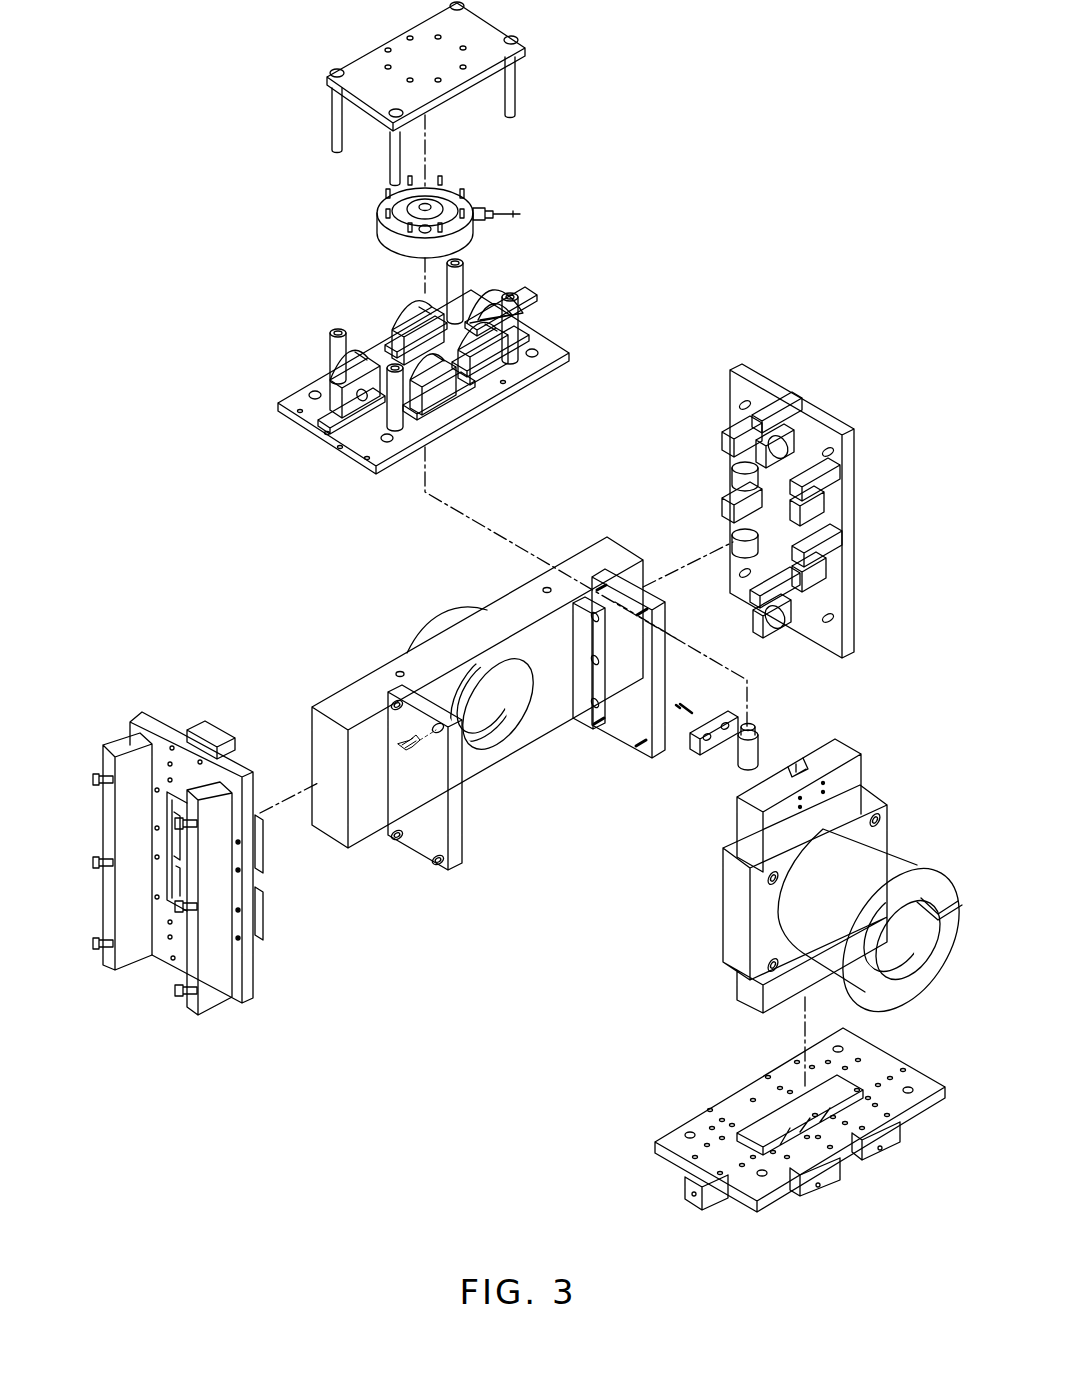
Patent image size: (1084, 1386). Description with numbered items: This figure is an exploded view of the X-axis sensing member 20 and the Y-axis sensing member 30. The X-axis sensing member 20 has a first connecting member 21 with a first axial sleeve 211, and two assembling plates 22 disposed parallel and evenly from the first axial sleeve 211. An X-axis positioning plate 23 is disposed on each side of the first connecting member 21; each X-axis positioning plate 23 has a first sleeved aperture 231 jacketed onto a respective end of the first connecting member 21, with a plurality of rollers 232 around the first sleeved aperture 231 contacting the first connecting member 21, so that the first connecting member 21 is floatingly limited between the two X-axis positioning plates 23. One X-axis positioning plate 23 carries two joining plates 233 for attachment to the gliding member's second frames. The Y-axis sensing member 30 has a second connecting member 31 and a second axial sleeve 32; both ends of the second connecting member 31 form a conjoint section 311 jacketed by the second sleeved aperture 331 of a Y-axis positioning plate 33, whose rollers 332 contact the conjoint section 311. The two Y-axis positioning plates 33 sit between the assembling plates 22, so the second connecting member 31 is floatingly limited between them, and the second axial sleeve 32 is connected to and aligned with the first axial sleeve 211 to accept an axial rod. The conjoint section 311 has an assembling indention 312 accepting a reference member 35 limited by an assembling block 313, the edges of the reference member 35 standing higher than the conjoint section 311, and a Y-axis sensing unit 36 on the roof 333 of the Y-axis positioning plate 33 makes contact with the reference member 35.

The X-axis sensing member 20 is at (325, 622).
The first connecting member 21 is at (362, 828).
The first axial sleeve 211 is at (490, 728).
The assembling plates 22 is at (427, 848).
The X-axis positioning plate 23 is at (162, 728).
The first sleeved aperture 231 is at (180, 870).
The rollers 232 is at (215, 732).
The joining plates 233 is at (218, 995).
The Y-axis sensing member 30 is at (700, 988).
The second connecting member 31 is at (740, 907).
The conjoint section 311 is at (842, 758).
The assembling indention 312 is at (800, 778).
The assembling block 313 is at (700, 752).
The second axial sleeve 32 is at (892, 870).
The Y-axis positioning plate 33 is at (557, 347).
The second sleeved aperture 331 is at (445, 368).
The rollers 332 is at (493, 297).
The roof 333 is at (337, 86).
The reference member 35 is at (757, 762).
The Y-axis sensing unit 36 is at (392, 238).